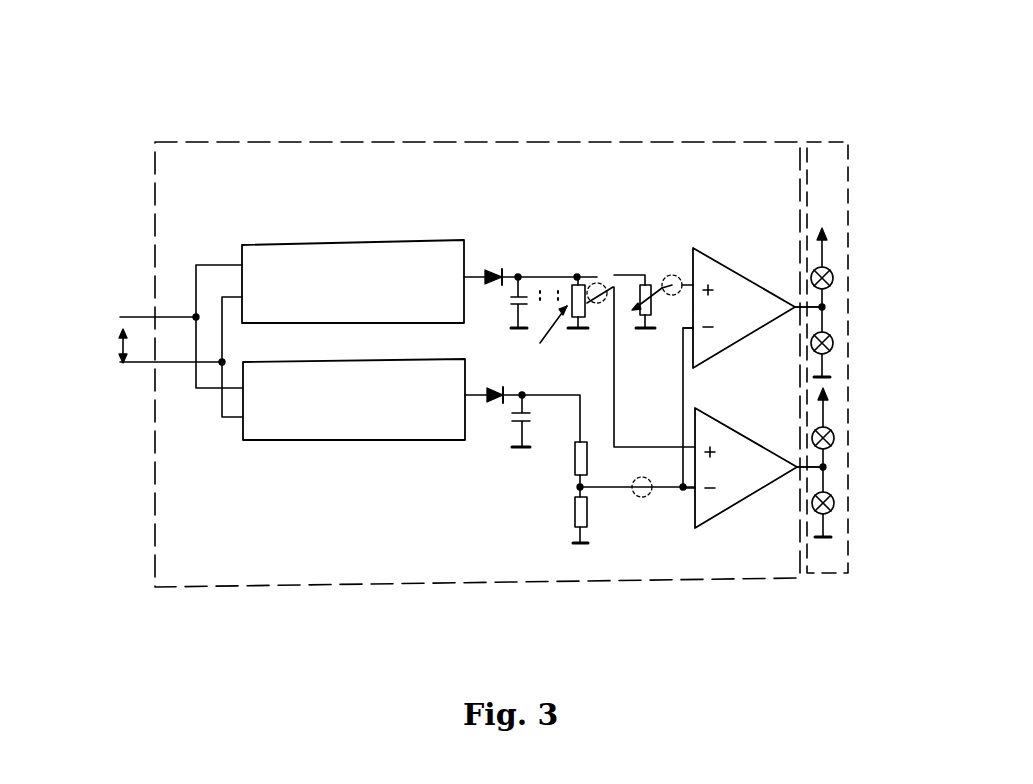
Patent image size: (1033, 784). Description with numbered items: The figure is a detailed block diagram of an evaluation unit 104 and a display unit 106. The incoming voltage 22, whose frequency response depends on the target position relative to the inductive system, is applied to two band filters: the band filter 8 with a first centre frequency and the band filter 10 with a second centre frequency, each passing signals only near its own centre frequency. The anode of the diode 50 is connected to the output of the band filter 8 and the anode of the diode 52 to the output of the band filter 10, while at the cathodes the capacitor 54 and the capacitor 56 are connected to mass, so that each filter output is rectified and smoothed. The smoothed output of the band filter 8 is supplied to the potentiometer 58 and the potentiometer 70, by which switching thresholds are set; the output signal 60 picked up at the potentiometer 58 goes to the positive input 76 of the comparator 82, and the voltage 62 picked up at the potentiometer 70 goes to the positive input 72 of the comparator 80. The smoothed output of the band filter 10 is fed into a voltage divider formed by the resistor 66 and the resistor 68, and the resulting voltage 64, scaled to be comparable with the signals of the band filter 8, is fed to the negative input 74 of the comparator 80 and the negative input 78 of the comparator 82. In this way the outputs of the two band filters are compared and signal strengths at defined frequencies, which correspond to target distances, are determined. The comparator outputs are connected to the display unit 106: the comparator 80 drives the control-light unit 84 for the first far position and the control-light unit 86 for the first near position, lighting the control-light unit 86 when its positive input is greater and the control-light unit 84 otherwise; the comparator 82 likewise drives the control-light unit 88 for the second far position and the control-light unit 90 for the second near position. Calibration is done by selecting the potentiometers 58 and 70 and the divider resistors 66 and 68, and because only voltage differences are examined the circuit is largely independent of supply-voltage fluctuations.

The band filter 8 is at (258, 258).
The band filter 10 is at (260, 425).
The voltage 22 is at (117, 353).
The diode 50 is at (487, 257).
The diode 52 is at (483, 413).
The capacitor 54 is at (527, 290).
The capacitor 56 is at (507, 428).
The potentiometer 58 is at (540, 343).
The output signal 60 is at (602, 273).
The voltage 62 is at (673, 270).
The voltage 64 is at (638, 502).
The resistor 66 is at (573, 462).
The resistor 68 is at (567, 528).
The potentiometer 70 is at (630, 320).
The positive input 72 is at (700, 283).
The negative input 74 is at (700, 335).
The positive input 76 is at (700, 443).
The negative input 78 is at (700, 493).
The comparator 80 is at (757, 270).
The comparator 82 is at (758, 500).
The control-light unit 84 is at (848, 267).
The control-light unit 86 is at (845, 337).
The control-light unit 88 is at (845, 422).
The control-light unit 90 is at (845, 487).
The evaluation unit 104 is at (460, 128).
The display unit 106 is at (810, 130).